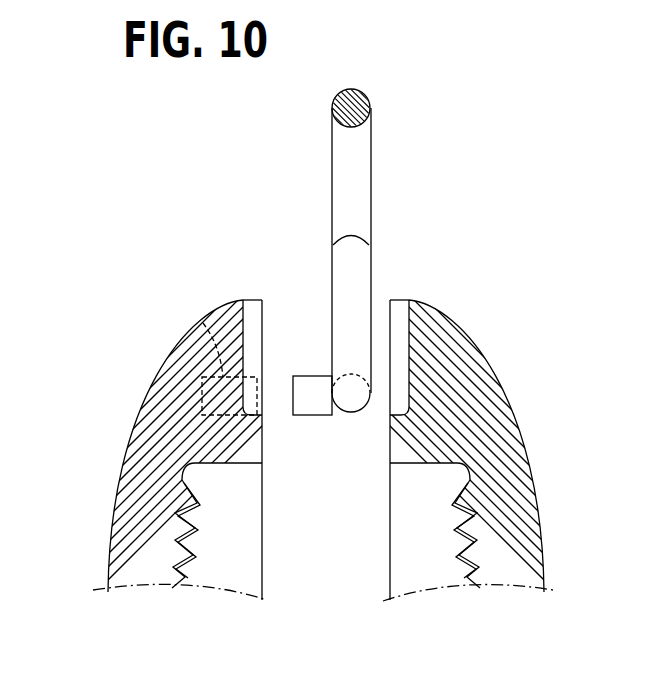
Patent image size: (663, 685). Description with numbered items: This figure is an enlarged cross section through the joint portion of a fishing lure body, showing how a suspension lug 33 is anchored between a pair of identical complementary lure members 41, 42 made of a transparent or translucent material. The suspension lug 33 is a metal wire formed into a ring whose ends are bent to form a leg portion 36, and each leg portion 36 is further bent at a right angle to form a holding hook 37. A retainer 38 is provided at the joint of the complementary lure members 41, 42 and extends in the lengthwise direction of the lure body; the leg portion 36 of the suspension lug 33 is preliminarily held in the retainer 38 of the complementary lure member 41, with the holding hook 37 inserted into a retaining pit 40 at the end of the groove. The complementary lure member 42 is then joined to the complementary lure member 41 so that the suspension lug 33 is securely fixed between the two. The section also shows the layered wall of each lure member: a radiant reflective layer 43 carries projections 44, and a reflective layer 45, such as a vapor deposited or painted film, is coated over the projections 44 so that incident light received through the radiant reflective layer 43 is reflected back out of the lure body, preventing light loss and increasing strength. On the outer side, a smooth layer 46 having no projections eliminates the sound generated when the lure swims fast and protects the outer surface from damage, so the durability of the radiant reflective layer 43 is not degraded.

The suspension lug 33 is at (371, 101).
The leg portion 36 is at (352, 372).
The holding hook 37 is at (311, 416).
The retainer 38 is at (265, 451).
The retaining pit 40 is at (203, 323).
The complementary lure member 41 is at (148, 396).
The complementary lure member 42 is at (503, 383).
The radiant reflective layer 43 is at (485, 539).
The projections 44 is at (503, 592).
The reflective layer 45 is at (460, 553).
The smooth layer 46 is at (115, 495).